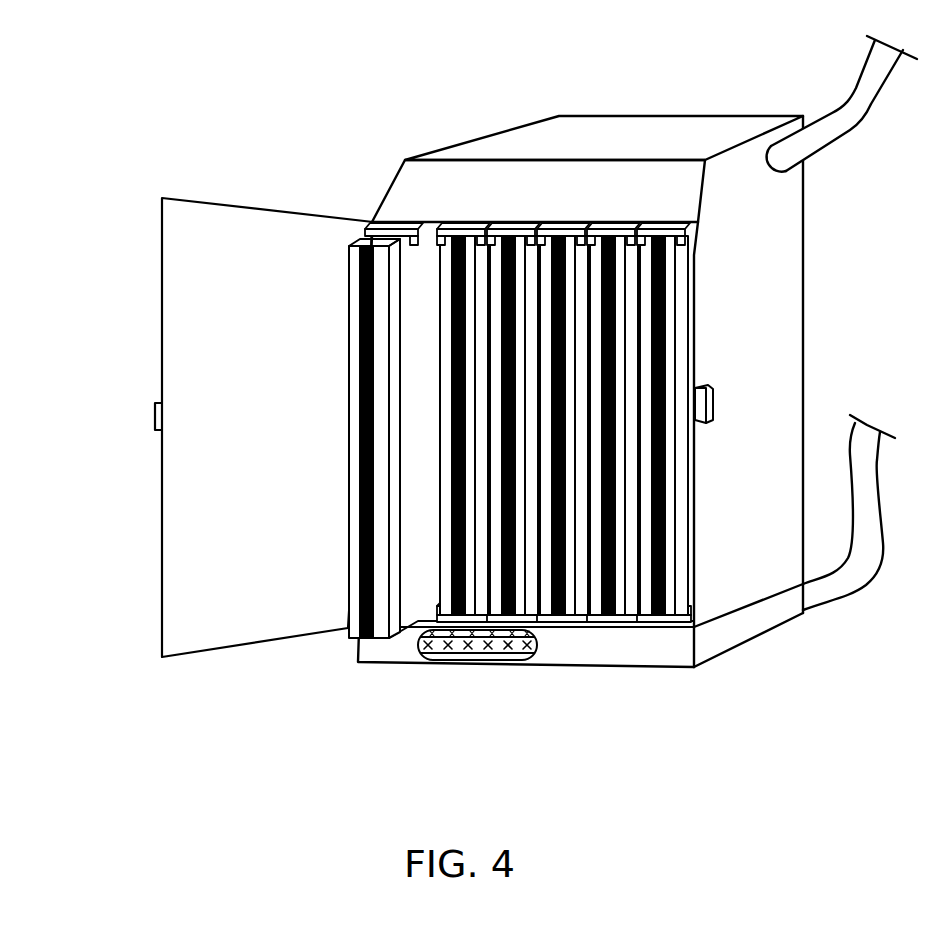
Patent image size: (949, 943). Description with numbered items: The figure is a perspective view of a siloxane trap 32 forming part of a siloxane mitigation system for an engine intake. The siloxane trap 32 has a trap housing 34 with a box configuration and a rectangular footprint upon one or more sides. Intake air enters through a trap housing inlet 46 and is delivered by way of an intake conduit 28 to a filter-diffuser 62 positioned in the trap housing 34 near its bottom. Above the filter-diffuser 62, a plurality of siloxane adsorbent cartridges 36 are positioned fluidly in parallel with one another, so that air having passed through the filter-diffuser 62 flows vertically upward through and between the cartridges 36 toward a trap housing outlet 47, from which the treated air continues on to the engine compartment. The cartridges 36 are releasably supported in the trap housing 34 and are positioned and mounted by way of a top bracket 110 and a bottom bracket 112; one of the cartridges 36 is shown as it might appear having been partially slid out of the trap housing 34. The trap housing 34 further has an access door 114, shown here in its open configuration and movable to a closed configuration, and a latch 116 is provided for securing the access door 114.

The intake conduit 28 is at (862, 63).
The siloxane trap 32 is at (348, 173).
The trap housing 34 is at (790, 203).
The siloxane adsorbent cartridges 36 is at (672, 306).
The trap housing inlet 46 is at (803, 614).
The trap housing outlet 47 is at (762, 135).
The filter-diffuser 62 is at (455, 652).
The top bracket 110 is at (663, 226).
The bottom bracket 112 is at (693, 628).
The access door 114 is at (220, 622).
The latch 116 is at (716, 400).